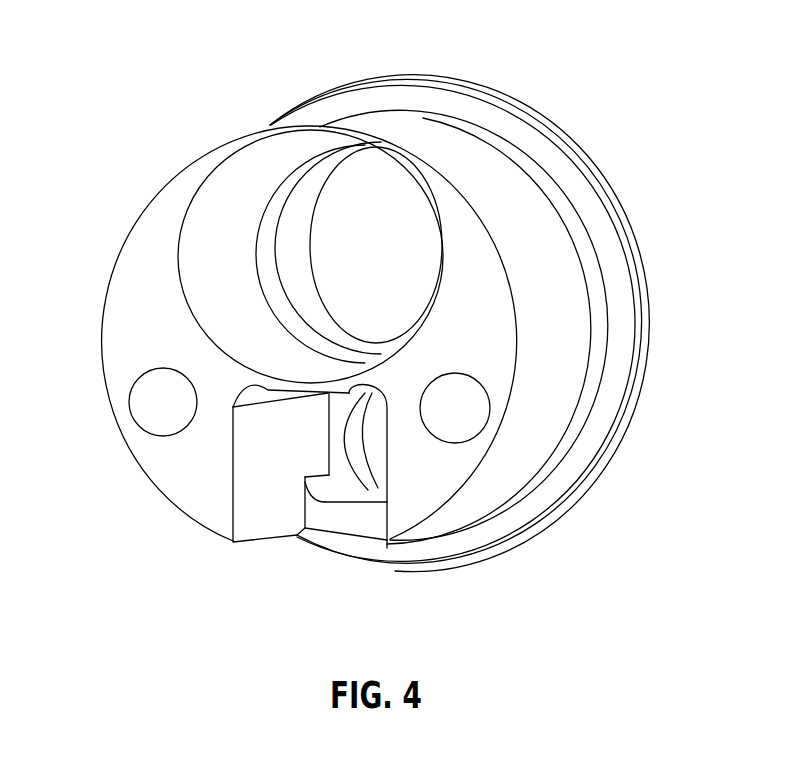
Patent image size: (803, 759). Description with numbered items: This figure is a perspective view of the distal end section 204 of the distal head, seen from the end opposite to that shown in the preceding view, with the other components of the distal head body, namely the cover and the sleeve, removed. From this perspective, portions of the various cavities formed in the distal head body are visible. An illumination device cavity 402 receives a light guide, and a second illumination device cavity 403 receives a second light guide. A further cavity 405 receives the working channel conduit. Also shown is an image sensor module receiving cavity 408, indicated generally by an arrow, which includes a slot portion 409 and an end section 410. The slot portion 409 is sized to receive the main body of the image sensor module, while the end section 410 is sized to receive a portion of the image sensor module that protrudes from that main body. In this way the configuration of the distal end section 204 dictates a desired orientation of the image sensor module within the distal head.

The distal end section 204 is at (490, 93).
The cavity 405 is at (213, 217).
The illumination device cavity 402 is at (157, 403).
The illumination device cavity 403 is at (468, 412).
The slot portion 409 is at (250, 510).
The end section 410 is at (348, 478).
The image sensor module receiving cavity 408 is at (358, 538).